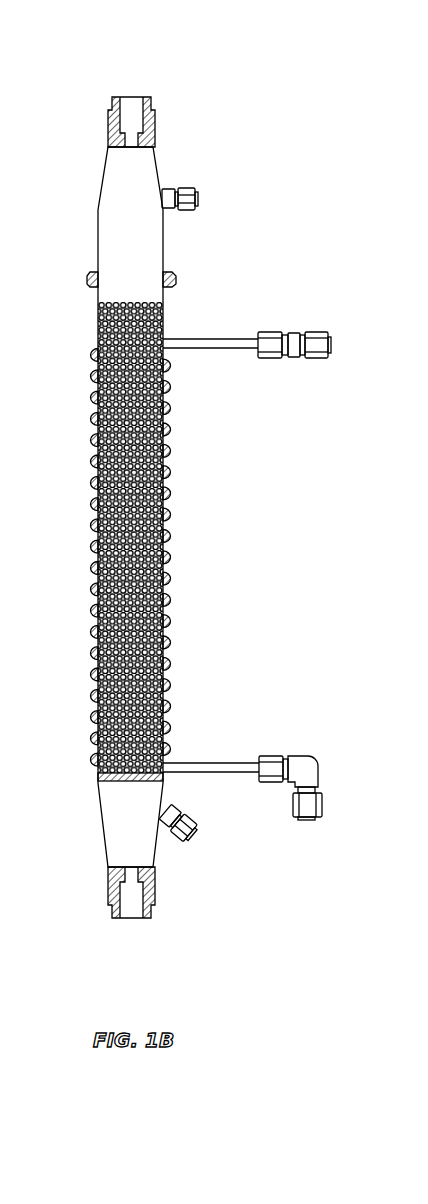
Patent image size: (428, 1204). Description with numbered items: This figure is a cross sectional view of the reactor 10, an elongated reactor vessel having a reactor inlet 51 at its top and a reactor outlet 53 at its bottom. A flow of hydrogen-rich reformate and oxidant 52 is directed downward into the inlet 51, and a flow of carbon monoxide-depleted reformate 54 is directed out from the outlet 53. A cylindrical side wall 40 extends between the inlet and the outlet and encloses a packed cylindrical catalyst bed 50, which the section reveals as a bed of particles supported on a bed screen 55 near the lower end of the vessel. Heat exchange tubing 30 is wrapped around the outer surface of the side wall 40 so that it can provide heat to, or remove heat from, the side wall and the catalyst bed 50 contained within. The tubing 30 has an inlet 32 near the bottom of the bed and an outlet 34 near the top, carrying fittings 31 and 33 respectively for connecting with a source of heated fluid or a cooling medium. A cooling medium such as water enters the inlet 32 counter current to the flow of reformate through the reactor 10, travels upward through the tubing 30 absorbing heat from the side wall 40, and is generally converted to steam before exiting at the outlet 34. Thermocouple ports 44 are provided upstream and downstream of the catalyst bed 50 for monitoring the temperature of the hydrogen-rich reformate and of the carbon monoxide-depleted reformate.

The reactor 10 is at (262, 224).
The heat exchange tubing 30 is at (175, 470).
The fitting 31 is at (307, 820).
The inlet 32 is at (210, 762).
The fitting 33 is at (331, 345).
The outlet 34 is at (212, 350).
The cylindrical side wall 40 is at (165, 250).
The thermocouple ports 44 is at (198, 199).
The cylindrical catalyst bed 50 is at (150, 535).
The reactor inlet 51 is at (155, 113).
The flow of hydrogen-rich reformate and oxidant 52 is at (132, 70).
The reactor outlet 53 is at (122, 920).
The flow of carbon monoxide-depleted reformate 54 is at (132, 975).
The bed screen 55 is at (115, 782).